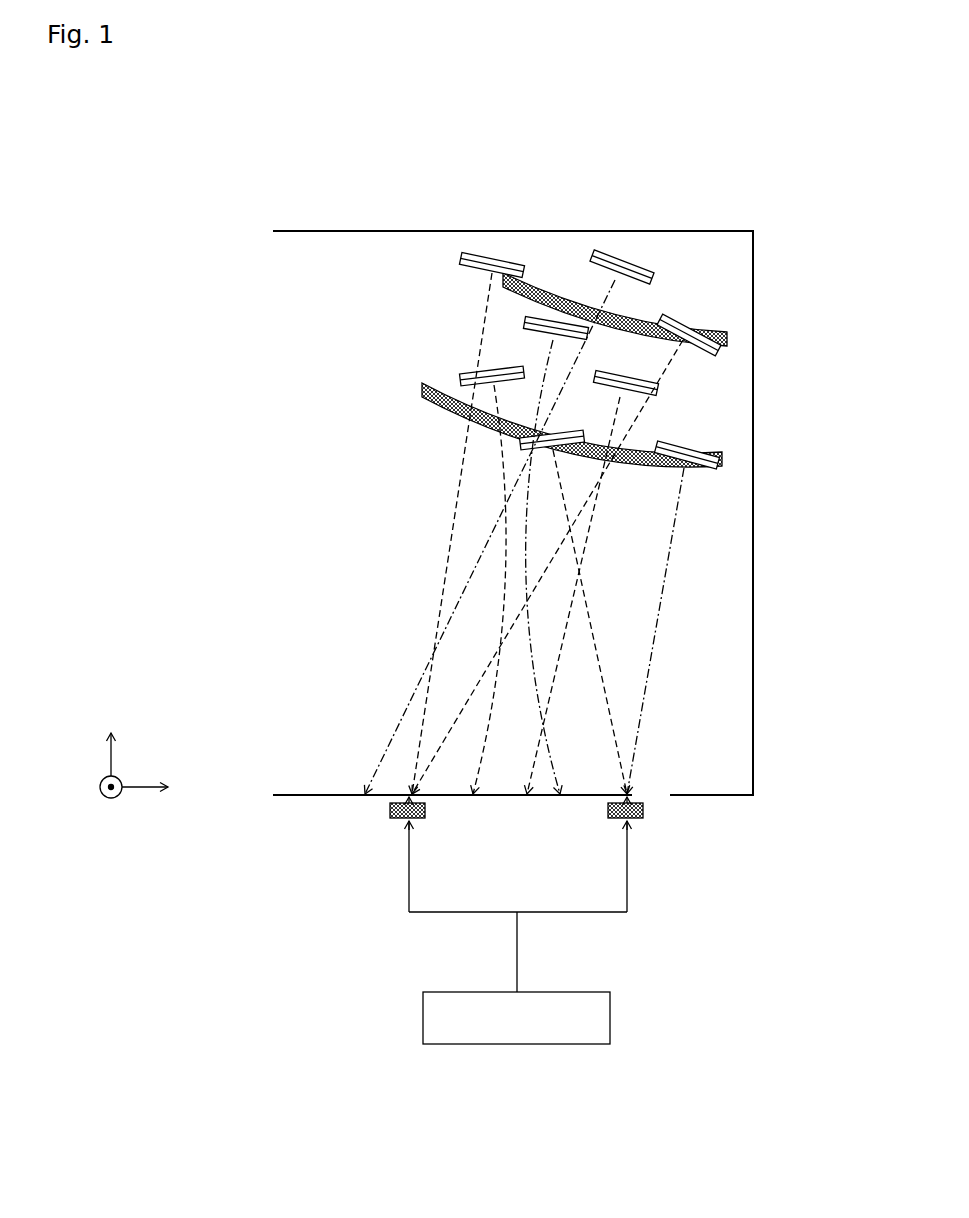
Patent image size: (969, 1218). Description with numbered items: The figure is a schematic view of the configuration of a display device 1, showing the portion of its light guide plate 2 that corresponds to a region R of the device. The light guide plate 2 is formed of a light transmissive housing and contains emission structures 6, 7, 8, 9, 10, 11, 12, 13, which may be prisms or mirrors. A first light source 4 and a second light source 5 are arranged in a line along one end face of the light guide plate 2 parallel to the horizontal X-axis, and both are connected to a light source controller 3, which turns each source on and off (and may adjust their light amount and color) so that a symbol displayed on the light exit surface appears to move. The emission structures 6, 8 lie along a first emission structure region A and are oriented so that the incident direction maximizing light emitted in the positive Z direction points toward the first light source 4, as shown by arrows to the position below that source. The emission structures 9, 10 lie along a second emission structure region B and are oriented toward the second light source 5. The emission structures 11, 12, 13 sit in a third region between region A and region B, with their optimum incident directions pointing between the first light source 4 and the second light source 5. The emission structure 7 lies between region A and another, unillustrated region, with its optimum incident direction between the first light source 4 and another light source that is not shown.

The display device 1 is at (230, 199).
The light guide plate 2 is at (755, 401).
The light source controller 3 is at (552, 1045).
The first light source 4 is at (418, 820).
The second light source 5 is at (618, 820).
The emission structure 6 is at (503, 256).
The emission structure 7 is at (614, 253).
The emission structure 8 is at (666, 316).
The emission structure 9 is at (576, 430).
The emission structure 10 is at (681, 442).
The emission structure 11 is at (466, 368).
The emission structure 12 is at (526, 332).
The emission structure 13 is at (633, 378).
The first emission structure region A is at (712, 323).
The second emission structure region B is at (436, 401).
The region R is at (291, 490).